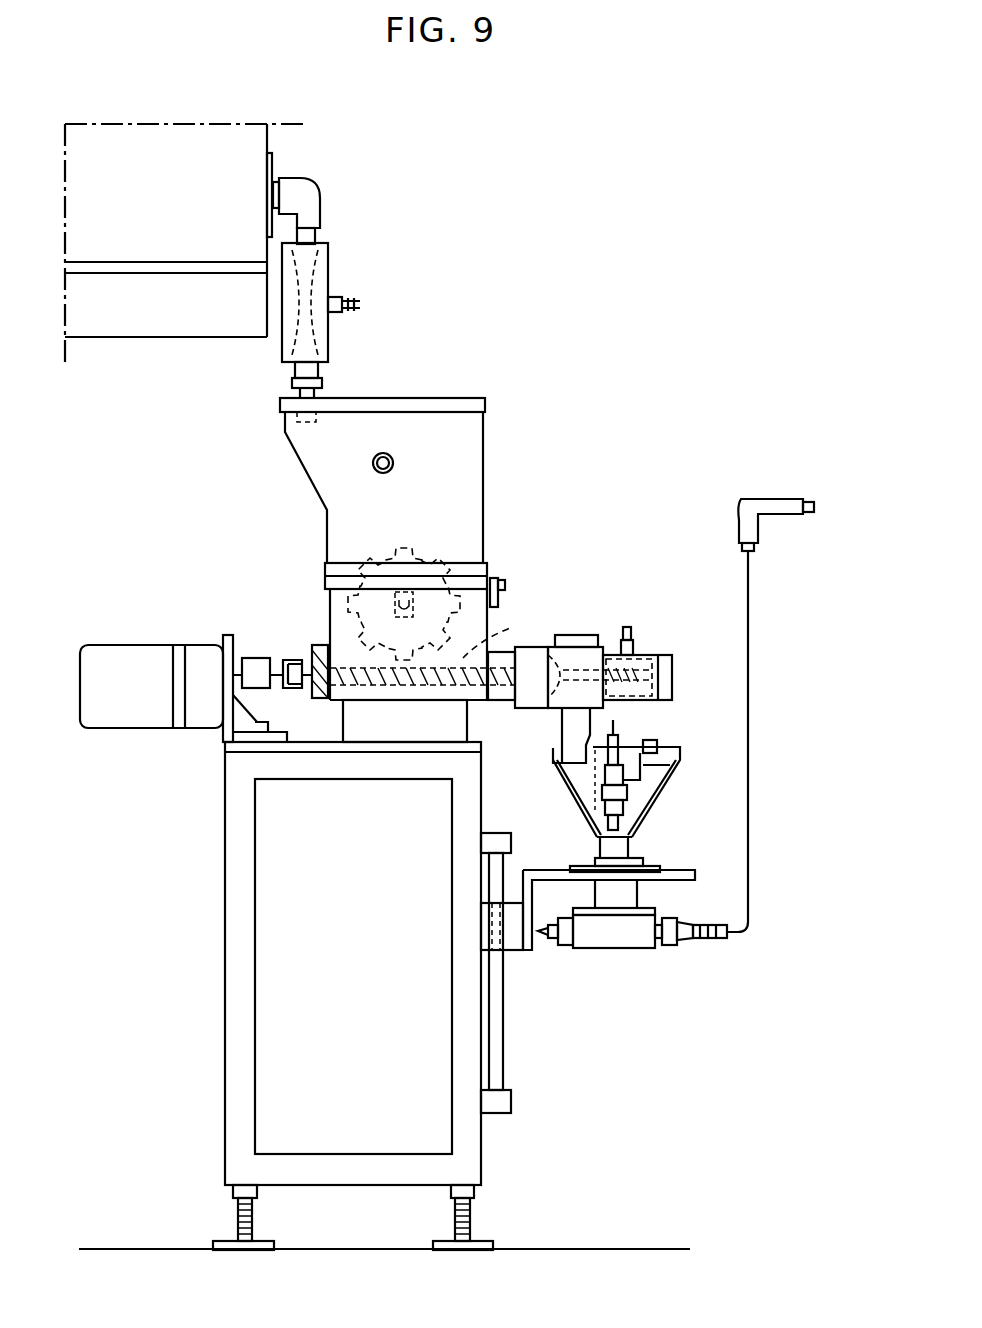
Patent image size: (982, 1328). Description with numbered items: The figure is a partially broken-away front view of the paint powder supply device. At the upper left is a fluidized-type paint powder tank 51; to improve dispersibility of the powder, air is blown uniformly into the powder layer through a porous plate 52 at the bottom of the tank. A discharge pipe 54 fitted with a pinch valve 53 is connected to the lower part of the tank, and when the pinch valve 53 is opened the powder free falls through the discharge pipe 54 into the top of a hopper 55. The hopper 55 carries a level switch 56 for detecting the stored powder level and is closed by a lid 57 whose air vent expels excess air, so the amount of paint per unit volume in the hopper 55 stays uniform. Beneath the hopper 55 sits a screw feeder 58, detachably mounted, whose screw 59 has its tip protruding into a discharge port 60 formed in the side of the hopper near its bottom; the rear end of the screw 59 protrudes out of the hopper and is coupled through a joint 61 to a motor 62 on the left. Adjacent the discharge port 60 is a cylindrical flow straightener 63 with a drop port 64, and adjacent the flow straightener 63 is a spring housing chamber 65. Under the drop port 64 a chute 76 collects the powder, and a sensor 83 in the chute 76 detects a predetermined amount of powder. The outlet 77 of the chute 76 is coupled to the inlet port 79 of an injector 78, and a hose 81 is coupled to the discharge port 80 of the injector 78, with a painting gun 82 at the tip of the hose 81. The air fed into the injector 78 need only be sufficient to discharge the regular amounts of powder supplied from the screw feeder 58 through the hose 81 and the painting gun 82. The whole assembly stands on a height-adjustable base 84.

The paint powder tank 51 is at (247, 138).
The porous plate 52 is at (138, 265).
The pinch valve 53 is at (325, 283).
The discharge pipe 54 is at (310, 208).
The hopper 55 is at (464, 498).
The level switch 56 is at (398, 463).
The lid 57 is at (466, 403).
The screw feeder 58 is at (343, 640).
The screw 59 is at (500, 633).
The discharge port 60 is at (505, 648).
The joint 61 is at (283, 658).
The motor 62 is at (132, 660).
The flow straightener 63 is at (590, 655).
The drop port 64 is at (568, 737).
The spring housing chamber 65 is at (650, 655).
The chute 76 is at (570, 798).
The outlet 77 is at (637, 838).
The injector 78 is at (626, 935).
The inlet port 79 is at (605, 893).
The discharge port 80 is at (700, 940).
The hose 81 is at (748, 878).
The painting gun 82 is at (778, 502).
The sensor 83 is at (615, 822).
The height-adjustable base 84 is at (235, 920).